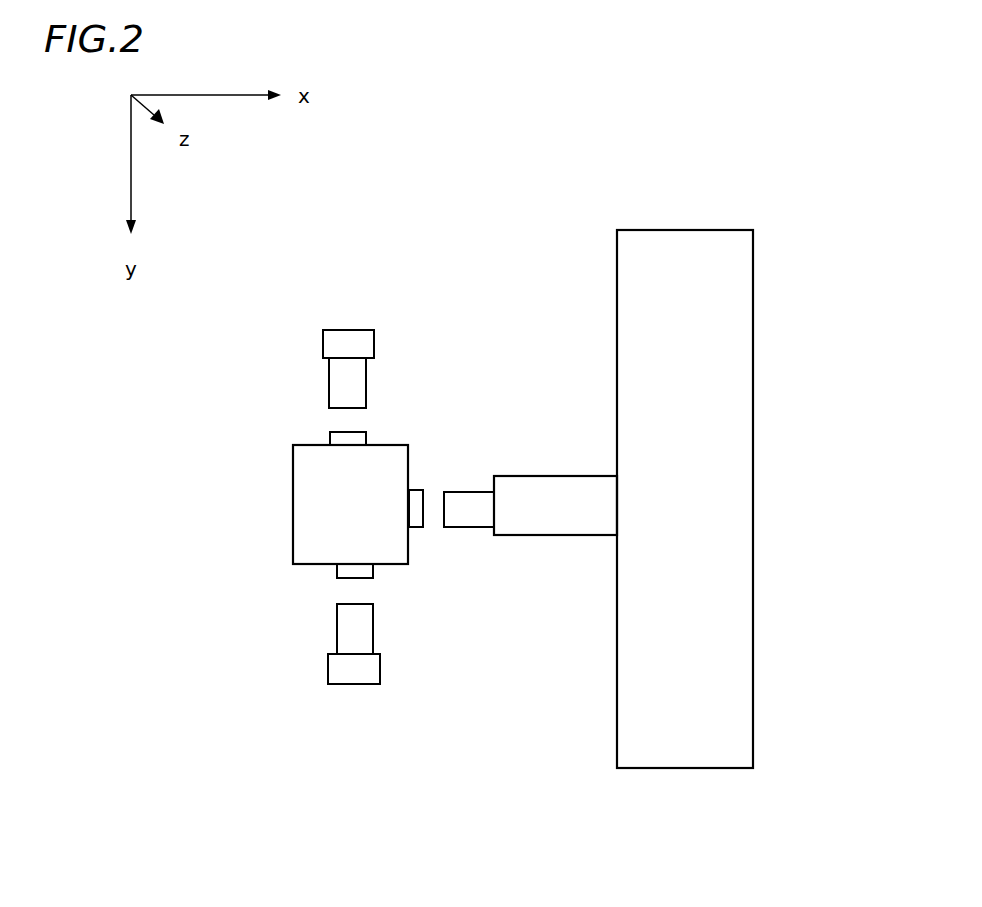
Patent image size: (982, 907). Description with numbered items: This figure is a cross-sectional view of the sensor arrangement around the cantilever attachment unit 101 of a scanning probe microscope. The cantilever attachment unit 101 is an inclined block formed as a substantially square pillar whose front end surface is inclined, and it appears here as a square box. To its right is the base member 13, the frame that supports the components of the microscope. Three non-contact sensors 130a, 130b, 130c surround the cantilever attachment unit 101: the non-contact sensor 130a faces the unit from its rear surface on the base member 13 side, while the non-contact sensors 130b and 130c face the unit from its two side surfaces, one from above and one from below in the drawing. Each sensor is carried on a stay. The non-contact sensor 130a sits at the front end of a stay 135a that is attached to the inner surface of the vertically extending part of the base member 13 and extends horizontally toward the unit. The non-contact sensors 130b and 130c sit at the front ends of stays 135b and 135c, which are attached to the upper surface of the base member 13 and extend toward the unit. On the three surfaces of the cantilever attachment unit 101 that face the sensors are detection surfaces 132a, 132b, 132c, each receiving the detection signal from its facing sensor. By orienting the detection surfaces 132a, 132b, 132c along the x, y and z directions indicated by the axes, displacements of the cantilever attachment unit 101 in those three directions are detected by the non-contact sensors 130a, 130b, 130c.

The base member 13 is at (756, 393).
The cantilever attachment unit 101 is at (303, 481).
The non-contact sensor 130a is at (455, 527).
The non-contact sensor 130b is at (367, 390).
The non-contact sensor 130c is at (343, 623).
The detection surface 132a is at (415, 527).
The detection surface 132b is at (367, 441).
The detection surface 132c is at (340, 572).
The stay 135a is at (537, 510).
The stay 135b is at (377, 339).
The stay 135c is at (324, 675).